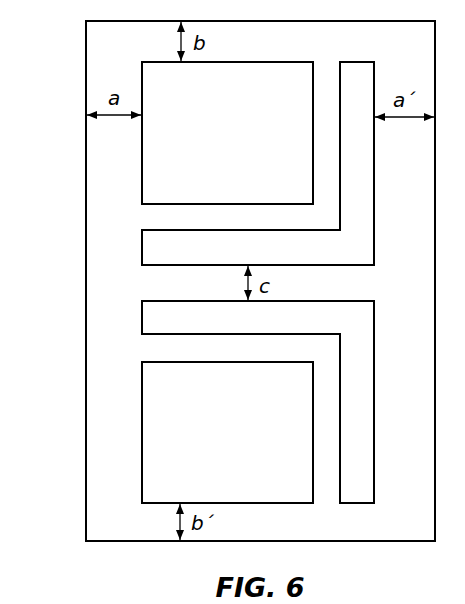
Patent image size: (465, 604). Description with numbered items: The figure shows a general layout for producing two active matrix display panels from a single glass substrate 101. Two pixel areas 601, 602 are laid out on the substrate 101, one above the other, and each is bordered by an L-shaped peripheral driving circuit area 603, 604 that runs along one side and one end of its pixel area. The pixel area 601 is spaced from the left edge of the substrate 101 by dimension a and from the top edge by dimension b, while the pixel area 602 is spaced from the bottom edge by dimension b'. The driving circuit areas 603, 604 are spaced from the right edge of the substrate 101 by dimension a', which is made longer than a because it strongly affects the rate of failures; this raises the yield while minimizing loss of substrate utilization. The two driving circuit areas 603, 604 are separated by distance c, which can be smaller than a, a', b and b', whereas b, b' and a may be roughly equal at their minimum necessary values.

The substrate 101 is at (226, 281).
The pixel area 601 is at (227, 133).
The pixel area 602 is at (227, 432).
The peripheral driving circuit area 603 is at (202, 163).
The peripheral driving circuit area 604 is at (202, 389).